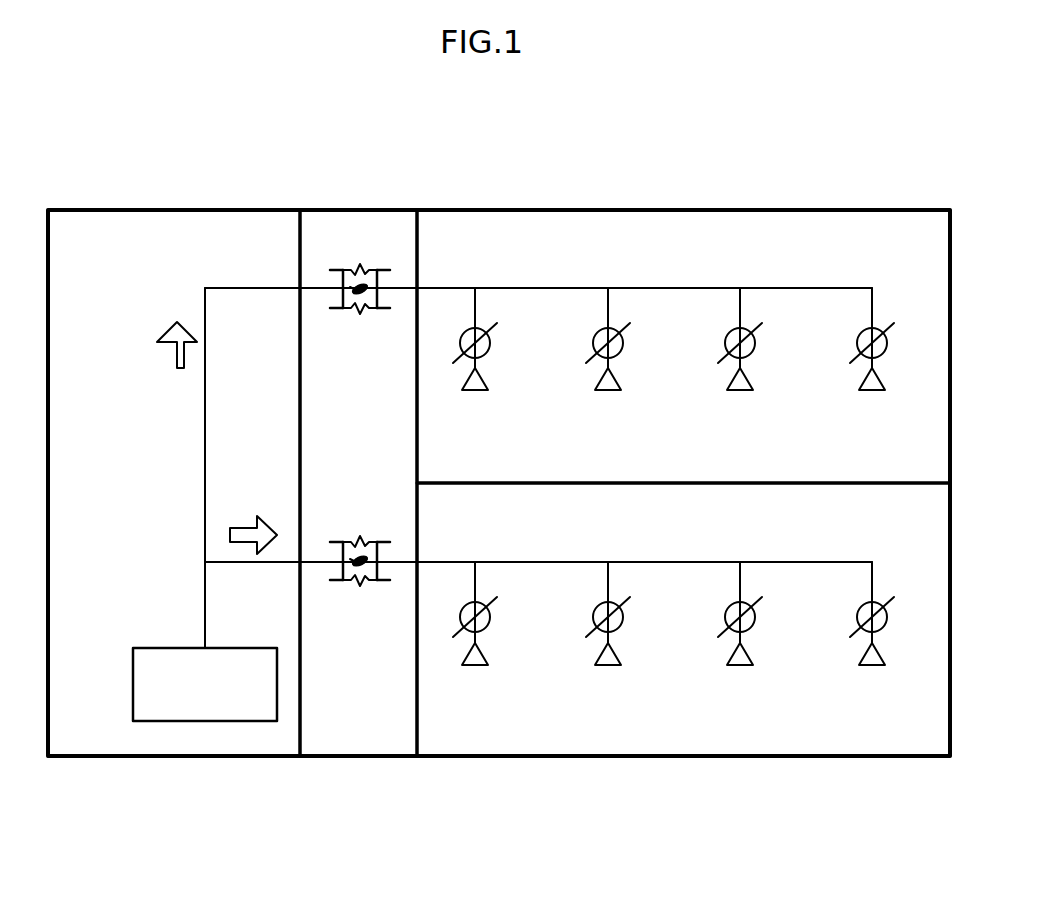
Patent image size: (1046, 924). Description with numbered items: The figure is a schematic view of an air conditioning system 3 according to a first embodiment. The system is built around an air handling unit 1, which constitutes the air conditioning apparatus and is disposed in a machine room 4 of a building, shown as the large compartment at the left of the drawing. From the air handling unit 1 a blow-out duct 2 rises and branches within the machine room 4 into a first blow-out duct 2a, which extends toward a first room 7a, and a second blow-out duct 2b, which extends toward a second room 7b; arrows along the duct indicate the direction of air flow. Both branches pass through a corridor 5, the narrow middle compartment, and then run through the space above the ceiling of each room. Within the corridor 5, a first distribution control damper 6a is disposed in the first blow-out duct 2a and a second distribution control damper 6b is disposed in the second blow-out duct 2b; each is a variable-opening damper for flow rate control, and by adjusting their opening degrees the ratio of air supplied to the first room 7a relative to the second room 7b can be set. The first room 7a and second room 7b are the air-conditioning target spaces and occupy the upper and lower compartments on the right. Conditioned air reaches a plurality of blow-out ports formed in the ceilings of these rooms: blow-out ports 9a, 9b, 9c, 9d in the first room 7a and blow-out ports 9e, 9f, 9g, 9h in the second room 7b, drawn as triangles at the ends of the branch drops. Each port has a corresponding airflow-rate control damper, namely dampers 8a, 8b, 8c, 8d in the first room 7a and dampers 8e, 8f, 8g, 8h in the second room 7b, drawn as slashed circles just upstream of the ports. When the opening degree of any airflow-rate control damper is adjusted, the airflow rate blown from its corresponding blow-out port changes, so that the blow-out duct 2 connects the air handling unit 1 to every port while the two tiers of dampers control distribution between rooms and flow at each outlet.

The air handling unit 1 is at (133, 680).
The blow-out duct 2 is at (205, 607).
The first blow-out duct 2a is at (249, 286).
The second blow-out duct 2b is at (248, 566).
The air conditioning system 3 is at (131, 795).
The machine room 4 is at (113, 230).
The corridor 5 is at (361, 232).
The first distribution control damper 6a is at (362, 308).
The second distribution control damper 6b is at (362, 580).
The first room 7a is at (847, 233).
The second room 7b is at (843, 738).
The airflow-rate control damper 8a is at (490, 344).
The airflow-rate control damper 8b is at (623, 344).
The airflow-rate control damper 8c is at (755, 344).
The airflow-rate control damper 8d is at (887, 344).
The airflow-rate control damper 8e is at (490, 618).
The airflow-rate control damper 8f is at (623, 618).
The airflow-rate control damper 8g is at (755, 618).
The airflow-rate control damper 8h is at (887, 618).
The blow-out port 9a is at (472, 392).
The blow-out port 9b is at (605, 392).
The blow-out port 9c is at (737, 392).
The blow-out port 9d is at (869, 392).
The blow-out port 9e is at (472, 667).
The blow-out port 9f is at (605, 667).
The blow-out port 9g is at (737, 667).
The blow-out port 9h is at (869, 667).